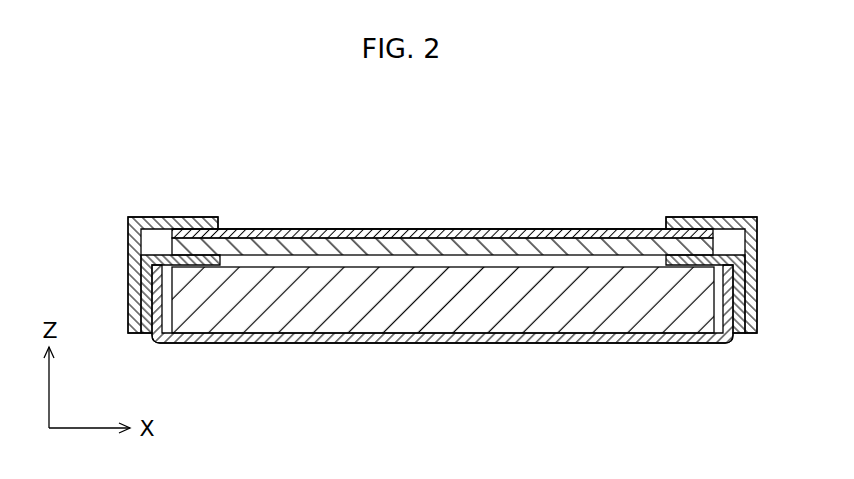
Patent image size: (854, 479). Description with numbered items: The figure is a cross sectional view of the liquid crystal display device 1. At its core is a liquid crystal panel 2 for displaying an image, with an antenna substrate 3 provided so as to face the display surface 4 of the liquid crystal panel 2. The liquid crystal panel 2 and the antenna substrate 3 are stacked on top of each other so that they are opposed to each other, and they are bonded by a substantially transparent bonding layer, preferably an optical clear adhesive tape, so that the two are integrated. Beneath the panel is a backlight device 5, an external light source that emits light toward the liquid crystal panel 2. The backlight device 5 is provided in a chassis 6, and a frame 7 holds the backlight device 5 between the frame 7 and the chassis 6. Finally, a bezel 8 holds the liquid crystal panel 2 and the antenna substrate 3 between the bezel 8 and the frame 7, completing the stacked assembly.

The liquid crystal display device 1 is at (524, 172).
The liquid crystal panel 2 is at (403, 244).
The antenna substrate 3 is at (315, 232).
The display surface 4 is at (625, 230).
The backlight device 5 is at (362, 319).
The chassis 6 is at (303, 337).
The frame 7 is at (205, 262).
The bezel 8 is at (162, 227).